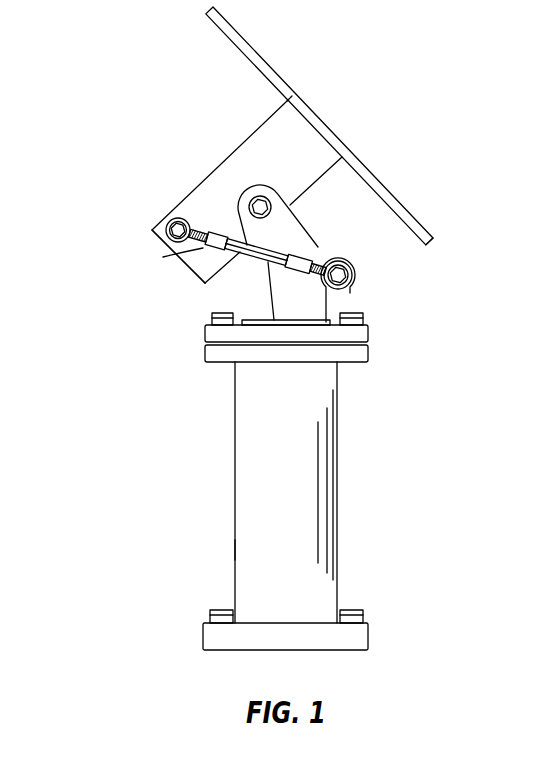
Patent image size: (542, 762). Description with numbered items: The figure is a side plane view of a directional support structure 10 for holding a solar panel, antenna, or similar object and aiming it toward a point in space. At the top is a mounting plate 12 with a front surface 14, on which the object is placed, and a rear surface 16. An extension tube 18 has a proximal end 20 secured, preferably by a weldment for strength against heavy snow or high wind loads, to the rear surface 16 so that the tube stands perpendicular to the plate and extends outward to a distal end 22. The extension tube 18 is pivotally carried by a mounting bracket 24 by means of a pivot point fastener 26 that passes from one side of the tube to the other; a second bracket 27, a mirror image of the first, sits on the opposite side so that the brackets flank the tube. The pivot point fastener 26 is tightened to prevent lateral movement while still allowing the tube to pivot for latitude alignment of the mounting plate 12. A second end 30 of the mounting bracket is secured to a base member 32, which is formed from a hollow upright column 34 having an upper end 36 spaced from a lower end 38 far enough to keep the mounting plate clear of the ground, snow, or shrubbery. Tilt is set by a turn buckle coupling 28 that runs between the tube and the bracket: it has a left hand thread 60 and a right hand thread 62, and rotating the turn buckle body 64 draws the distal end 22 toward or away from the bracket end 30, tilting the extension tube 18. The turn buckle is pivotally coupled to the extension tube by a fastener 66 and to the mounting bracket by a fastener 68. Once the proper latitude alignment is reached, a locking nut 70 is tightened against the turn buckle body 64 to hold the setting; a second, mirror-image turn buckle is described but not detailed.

The directional support structure 10 is at (474, 389).
The mounting plate 12 is at (436, 207).
The front surface 14 is at (353, 157).
The rear surface 16 is at (389, 212).
The extension tube 18 is at (245, 167).
The proximal end 20 is at (287, 103).
The distal end 22 is at (165, 255).
The mounting bracket 24 is at (320, 252).
The pivot point fastener 26 is at (272, 208).
The second bracket 27 is at (353, 278).
The turn buckle coupling 28 is at (240, 262).
The second end 30 is at (365, 348).
The base member 32 is at (235, 488).
The hollow upright column 34 is at (235, 548).
The upper end 36 is at (337, 377).
The lower end 38 is at (320, 622).
The left hand thread 60 is at (197, 248).
The right hand thread 62 is at (312, 256).
The turn buckle body 64 is at (268, 262).
The fastener 66 is at (167, 237).
The fastener 68 is at (353, 292).
The locking nut 70 is at (312, 273).